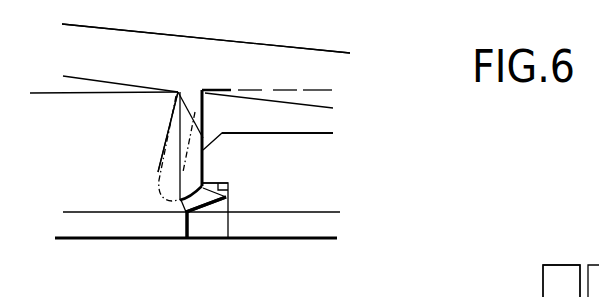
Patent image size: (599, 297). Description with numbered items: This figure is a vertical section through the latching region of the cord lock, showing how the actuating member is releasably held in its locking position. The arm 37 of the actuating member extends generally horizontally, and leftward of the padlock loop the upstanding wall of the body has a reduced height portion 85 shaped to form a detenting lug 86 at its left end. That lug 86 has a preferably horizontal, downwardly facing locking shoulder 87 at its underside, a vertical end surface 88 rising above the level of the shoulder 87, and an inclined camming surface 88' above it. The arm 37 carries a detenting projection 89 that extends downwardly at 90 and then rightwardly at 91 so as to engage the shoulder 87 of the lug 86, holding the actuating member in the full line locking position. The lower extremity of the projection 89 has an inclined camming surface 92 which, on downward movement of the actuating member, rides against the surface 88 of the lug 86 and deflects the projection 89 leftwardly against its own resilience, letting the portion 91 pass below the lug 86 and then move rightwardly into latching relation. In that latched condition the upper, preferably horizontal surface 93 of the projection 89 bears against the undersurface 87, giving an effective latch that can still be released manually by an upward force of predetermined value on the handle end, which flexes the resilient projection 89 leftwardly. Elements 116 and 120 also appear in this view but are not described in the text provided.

The arm 37 is at (180, 40).
The reduced height portion 85 is at (305, 167).
The detenting lug 86 is at (226, 160).
The locking shoulder 87 is at (228, 189).
The vertical end surface 88 is at (174, 145).
The inclined camming surface 88' is at (177, 126).
The detenting projection 89 is at (172, 185).
The downwardly extending portion 90 is at (174, 95).
The rightwardly extending portion 91 is at (206, 190).
The inclined camming surface 92 is at (196, 183).
The upper surface 93 is at (215, 188).
The lower member 116 is at (580, 294).
The block element 120 is at (557, 264).